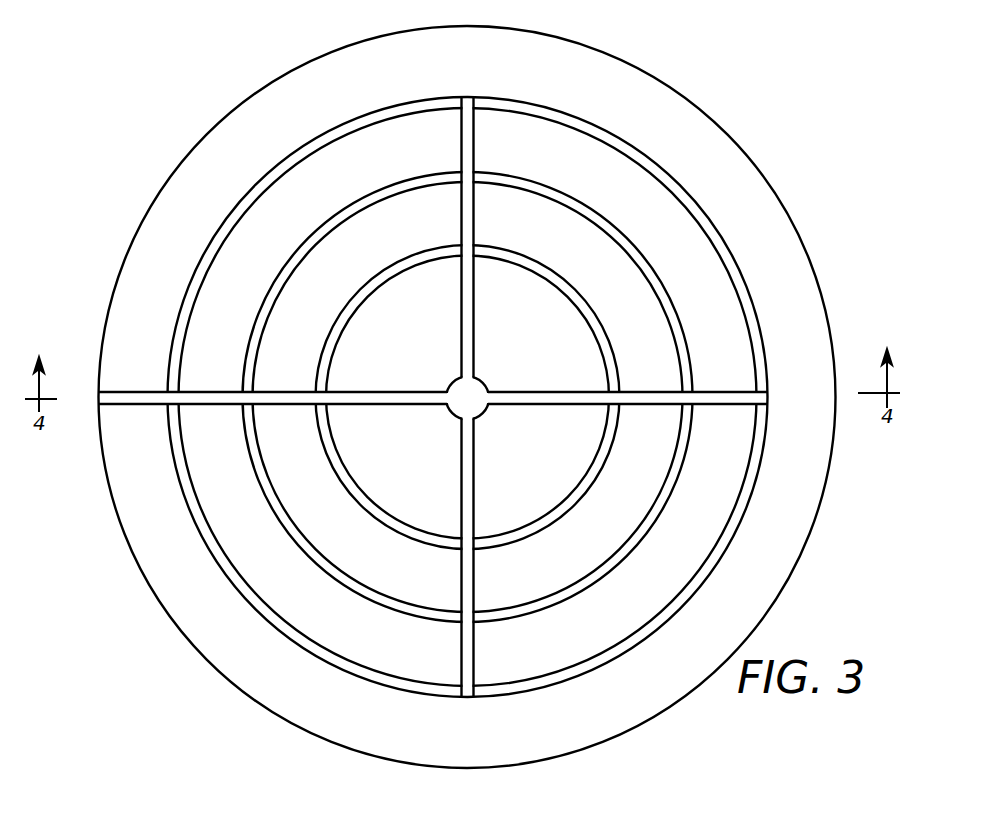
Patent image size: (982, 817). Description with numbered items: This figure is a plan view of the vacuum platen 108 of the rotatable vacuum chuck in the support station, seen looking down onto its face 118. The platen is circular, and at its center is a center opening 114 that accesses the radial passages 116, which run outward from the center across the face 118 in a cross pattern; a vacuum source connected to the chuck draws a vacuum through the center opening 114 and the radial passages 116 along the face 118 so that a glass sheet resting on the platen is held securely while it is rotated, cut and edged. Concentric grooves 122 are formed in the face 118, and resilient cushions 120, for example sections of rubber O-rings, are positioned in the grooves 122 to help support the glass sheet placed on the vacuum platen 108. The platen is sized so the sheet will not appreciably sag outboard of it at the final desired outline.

The vacuum platen 108 is at (670, 83).
The center opening 114 is at (453, 410).
The radial passages 116 is at (717, 390).
The face 118 is at (702, 255).
The resilient cushions 120 is at (650, 526).
The grooves 122 is at (220, 562).